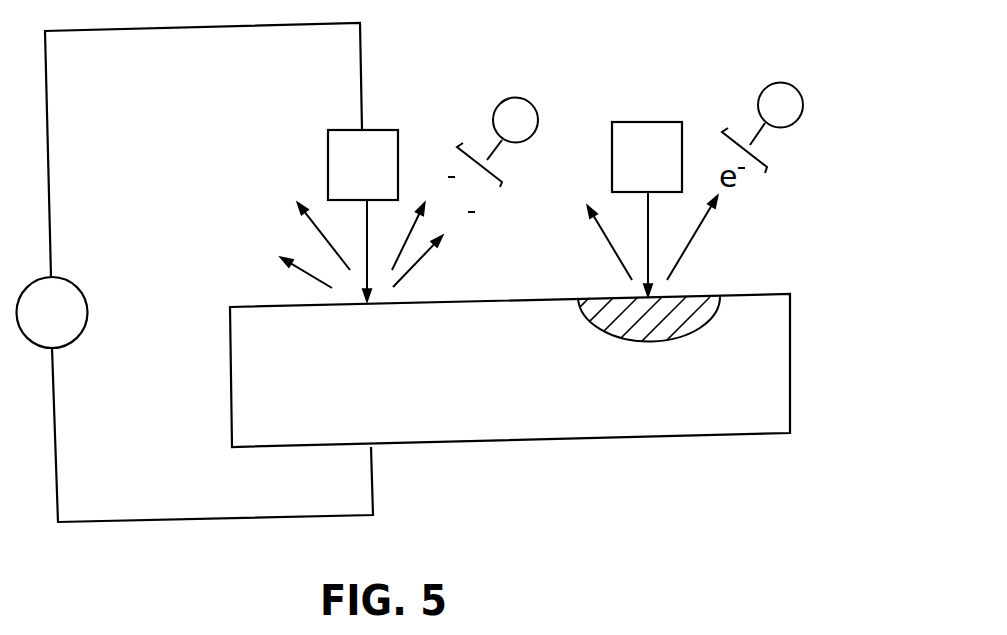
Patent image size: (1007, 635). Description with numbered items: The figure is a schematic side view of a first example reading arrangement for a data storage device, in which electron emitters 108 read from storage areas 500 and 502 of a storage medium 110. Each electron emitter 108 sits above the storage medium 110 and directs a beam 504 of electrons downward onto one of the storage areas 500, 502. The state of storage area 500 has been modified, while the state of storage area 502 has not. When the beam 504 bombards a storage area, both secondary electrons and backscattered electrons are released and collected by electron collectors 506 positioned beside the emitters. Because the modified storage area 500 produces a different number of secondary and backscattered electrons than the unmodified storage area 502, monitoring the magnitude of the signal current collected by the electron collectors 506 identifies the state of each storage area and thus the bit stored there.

The electron emitter 108 is at (347, 137).
The storage medium 110 is at (622, 461).
The storage area 500 is at (402, 302).
The storage area 502 is at (700, 295).
The beam of electrons 504 is at (363, 235).
The electron collector 506 is at (515, 98).